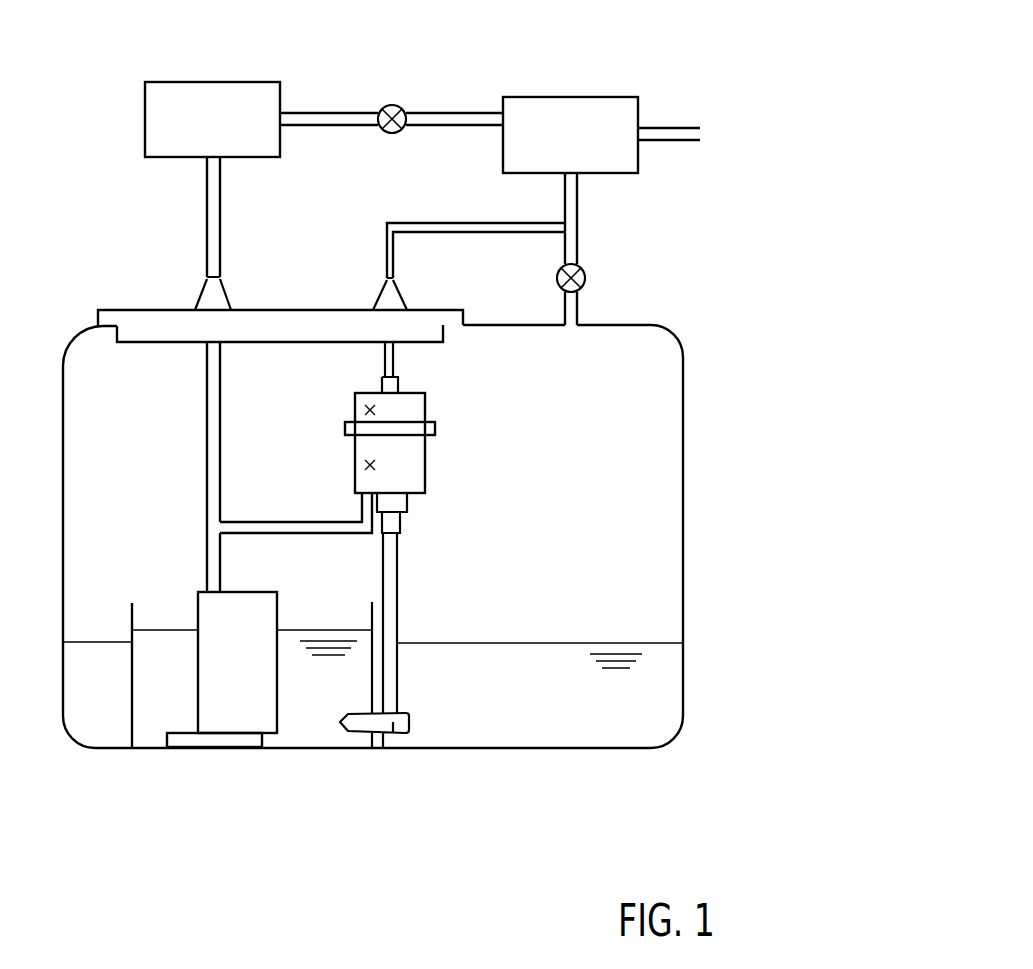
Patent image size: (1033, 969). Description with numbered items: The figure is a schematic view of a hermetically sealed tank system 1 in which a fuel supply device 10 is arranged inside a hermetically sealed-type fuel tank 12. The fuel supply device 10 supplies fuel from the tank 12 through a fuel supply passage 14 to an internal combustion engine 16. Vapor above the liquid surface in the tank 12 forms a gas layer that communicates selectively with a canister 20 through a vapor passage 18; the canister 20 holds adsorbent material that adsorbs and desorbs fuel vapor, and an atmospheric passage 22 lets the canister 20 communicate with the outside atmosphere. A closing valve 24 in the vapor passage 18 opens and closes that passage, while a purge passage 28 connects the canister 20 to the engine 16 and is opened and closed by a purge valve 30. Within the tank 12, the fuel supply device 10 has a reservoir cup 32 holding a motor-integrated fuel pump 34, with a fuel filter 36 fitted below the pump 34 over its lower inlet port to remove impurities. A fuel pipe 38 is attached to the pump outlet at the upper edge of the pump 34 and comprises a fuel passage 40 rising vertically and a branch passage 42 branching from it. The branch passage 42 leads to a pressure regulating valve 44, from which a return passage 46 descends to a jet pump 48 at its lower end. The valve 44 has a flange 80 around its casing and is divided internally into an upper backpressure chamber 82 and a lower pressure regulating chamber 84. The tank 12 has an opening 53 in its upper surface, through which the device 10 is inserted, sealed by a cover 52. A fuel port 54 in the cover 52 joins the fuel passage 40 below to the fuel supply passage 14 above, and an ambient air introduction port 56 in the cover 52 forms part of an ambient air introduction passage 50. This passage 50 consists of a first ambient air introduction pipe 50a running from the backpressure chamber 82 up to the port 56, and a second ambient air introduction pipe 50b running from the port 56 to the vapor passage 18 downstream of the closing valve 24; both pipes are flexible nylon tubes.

The hermetically sealed tank system 1 is at (728, 222).
The fuel supply device 10 is at (156, 577).
The hermetically sealed-type fuel tank 12 is at (683, 554).
The fuel supply passage 14 is at (207, 197).
The internal combustion engine 16 is at (194, 100).
The vapor passage 18 is at (577, 243).
The canister 20 is at (607, 115).
The atmospheric passage 22 is at (672, 128).
The closing valve 24 is at (585, 279).
The purge passage 28 is at (455, 113).
The purge valve 30 is at (392, 105).
The reservoir cup 32 is at (130, 716).
The fuel pump 34 is at (245, 717).
The fuel filter 36 is at (180, 746).
The fuel pipe 38 is at (193, 508).
The fuel passage 40 is at (220, 565).
The branch passage 42 is at (264, 520).
The pressure regulating valve 44 is at (447, 420).
The return passage 46 is at (397, 580).
The jet pump 48 is at (394, 734).
The ambient air introduction passage 50 is at (438, 222).
The first ambient air introduction pipe 50a is at (395, 358).
The second ambient air introduction pipe 50b is at (486, 233).
The cover 52 is at (155, 325).
The opening 53 is at (114, 306).
The fuel port 54 is at (222, 302).
The ambient air introduction port 56 is at (383, 300).
The flange 80 is at (345, 428).
The backpressure chamber 82 is at (365, 410).
The pressure regulating chamber 84 is at (365, 465).